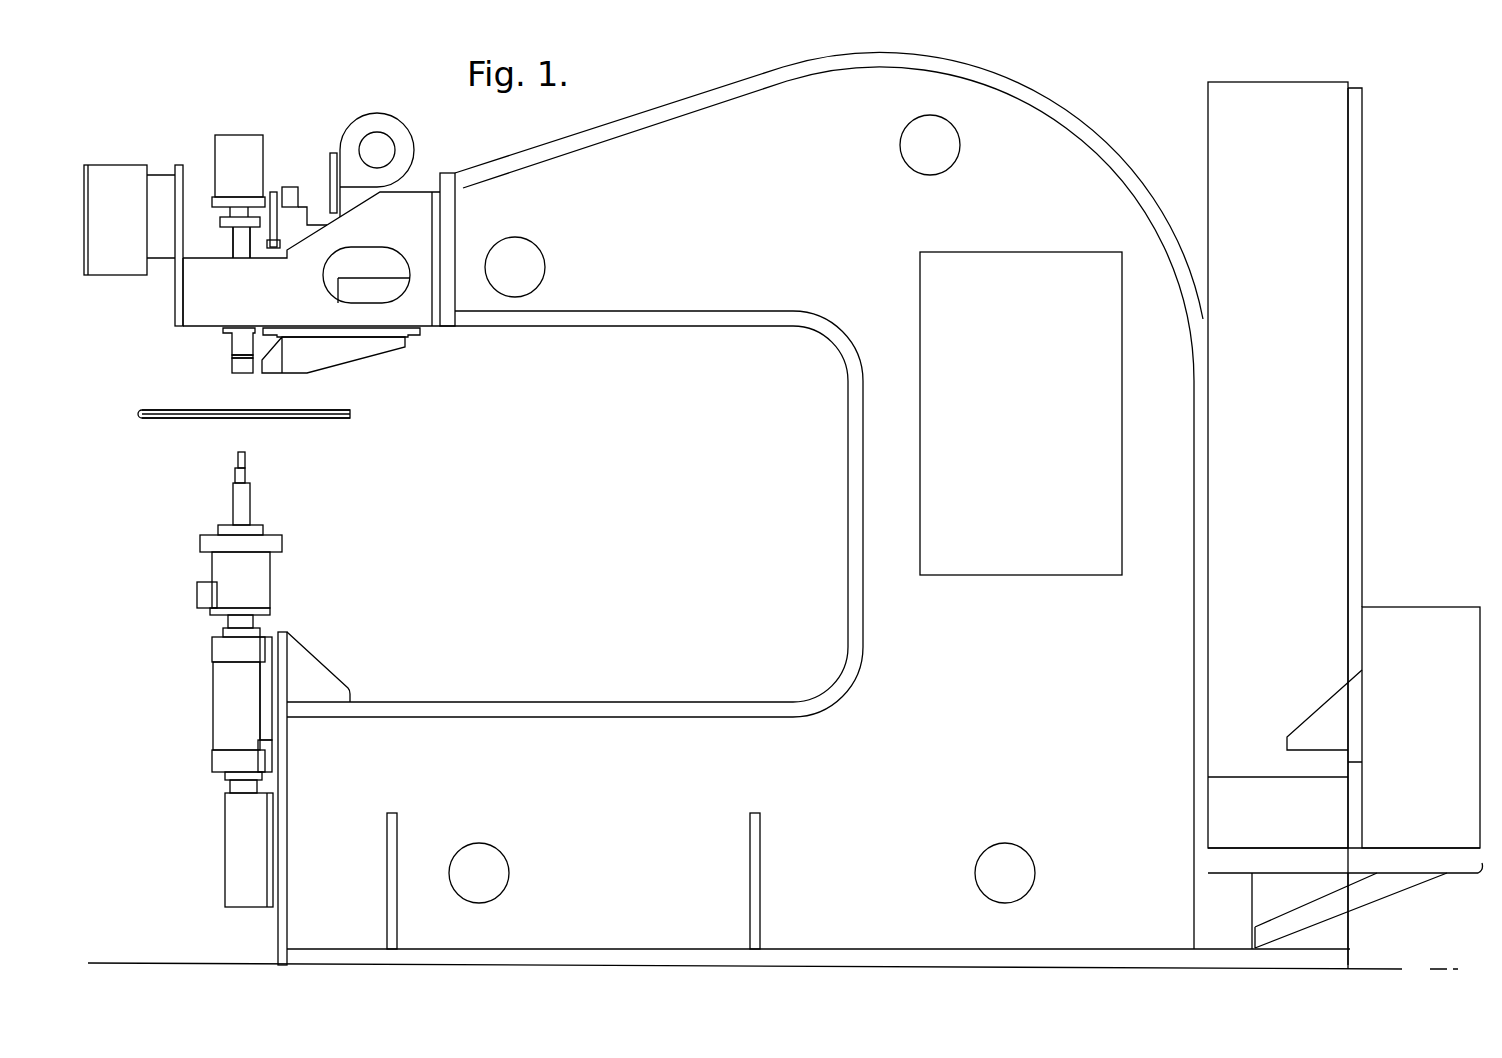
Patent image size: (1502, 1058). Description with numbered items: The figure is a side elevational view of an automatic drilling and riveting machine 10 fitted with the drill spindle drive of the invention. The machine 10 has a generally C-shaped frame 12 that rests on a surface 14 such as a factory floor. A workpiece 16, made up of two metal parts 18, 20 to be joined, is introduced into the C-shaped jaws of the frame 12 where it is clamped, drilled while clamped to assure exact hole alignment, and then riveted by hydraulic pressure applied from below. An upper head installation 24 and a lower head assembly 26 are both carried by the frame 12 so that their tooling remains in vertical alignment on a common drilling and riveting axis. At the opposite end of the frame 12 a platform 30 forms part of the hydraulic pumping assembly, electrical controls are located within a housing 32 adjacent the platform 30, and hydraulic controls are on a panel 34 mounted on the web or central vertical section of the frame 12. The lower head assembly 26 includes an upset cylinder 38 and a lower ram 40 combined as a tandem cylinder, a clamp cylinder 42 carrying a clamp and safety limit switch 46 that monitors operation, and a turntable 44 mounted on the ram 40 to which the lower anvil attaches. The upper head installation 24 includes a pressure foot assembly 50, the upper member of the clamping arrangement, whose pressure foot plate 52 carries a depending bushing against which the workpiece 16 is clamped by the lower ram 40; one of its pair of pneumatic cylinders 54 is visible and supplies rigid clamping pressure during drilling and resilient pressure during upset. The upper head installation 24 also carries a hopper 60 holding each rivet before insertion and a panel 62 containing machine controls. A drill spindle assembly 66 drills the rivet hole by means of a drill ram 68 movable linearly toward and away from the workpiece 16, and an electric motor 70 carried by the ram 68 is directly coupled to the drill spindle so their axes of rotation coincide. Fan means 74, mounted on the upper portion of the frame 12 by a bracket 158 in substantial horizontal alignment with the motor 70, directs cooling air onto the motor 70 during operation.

The automatic drilling and riveting machine 10 is at (185, 122).
The C-shaped frame 12 is at (720, 215).
The surface 14 is at (152, 963).
The workpiece 16 is at (263, 423).
The metal part 18 is at (138, 410).
The metal part 20 is at (138, 417).
The upper head installation 24 is at (299, 239).
The lower head assembly 26 is at (249, 679).
The platform 30 is at (1482, 863).
The housing 32 is at (1333, 443).
The panel 34 is at (1021, 413).
The upset cylinder 38 is at (232, 835).
The lower ram 40 is at (220, 712).
The clamp cylinder 42 is at (215, 565).
The turntable 44 is at (263, 530).
The clamp and safety limit switch 46 is at (197, 595).
The pressure foot assembly 50 is at (252, 375).
The pressure foot plate 52 is at (232, 364).
The pneumatic cylinder 54 is at (230, 342).
The hopper 60 is at (373, 343).
The panel 62 is at (122, 268).
The drill spindle assembly 66 is at (232, 242).
The drill ram 68 is at (232, 230).
The electric motor 70 is at (265, 133).
The fan means 74 is at (412, 140).
The bracket 158 is at (330, 173).